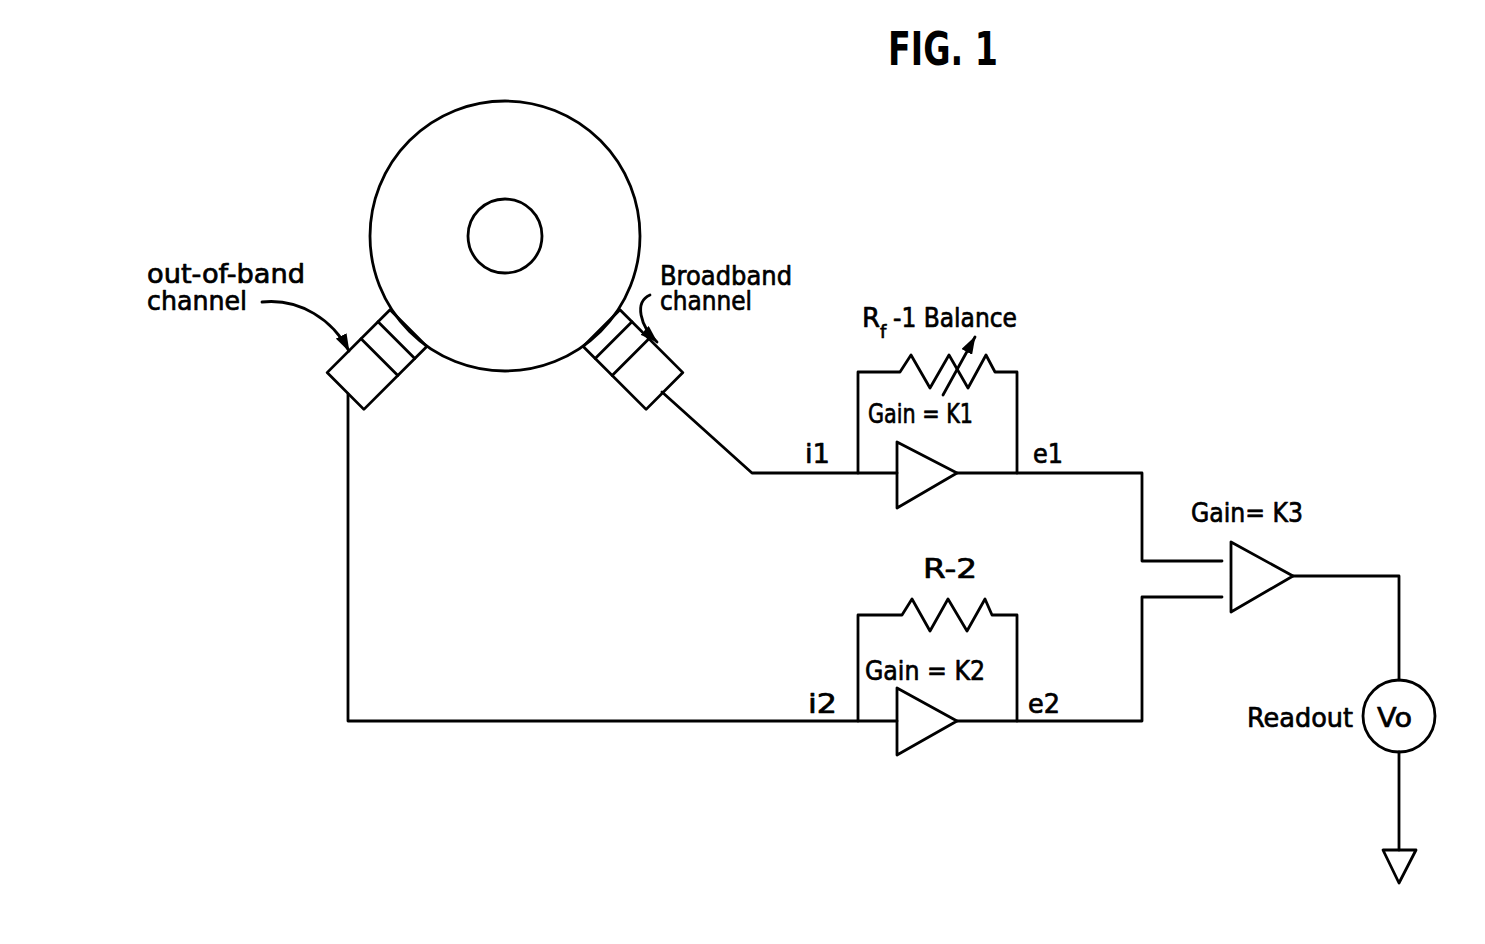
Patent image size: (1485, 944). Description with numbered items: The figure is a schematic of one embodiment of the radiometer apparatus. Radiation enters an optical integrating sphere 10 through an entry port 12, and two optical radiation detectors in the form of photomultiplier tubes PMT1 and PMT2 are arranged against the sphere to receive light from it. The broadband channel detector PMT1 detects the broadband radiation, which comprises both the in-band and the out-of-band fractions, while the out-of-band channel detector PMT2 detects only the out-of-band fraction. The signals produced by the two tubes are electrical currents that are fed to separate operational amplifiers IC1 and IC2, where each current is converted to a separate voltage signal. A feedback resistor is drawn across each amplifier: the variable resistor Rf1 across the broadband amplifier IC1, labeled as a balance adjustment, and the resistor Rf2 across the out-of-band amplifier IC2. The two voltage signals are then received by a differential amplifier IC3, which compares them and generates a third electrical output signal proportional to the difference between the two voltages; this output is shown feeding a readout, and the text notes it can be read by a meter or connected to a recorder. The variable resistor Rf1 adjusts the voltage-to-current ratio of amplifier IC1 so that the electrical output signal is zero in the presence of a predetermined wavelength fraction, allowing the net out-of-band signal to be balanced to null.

The optical integrating sphere 10 is at (641, 222).
The entry port 12 is at (534, 207).
The photomultiplier tube PMT1 is at (618, 364).
The photomultiplier tube PMT2 is at (398, 364).
The operational amplifier IC1 is at (947, 475).
The operational amplifier IC2 is at (938, 726).
The differential amplifier IC3 is at (1283, 577).
The variable resistor Rf1 is at (953, 405).
The feedback resistor Rf2 is at (955, 647).